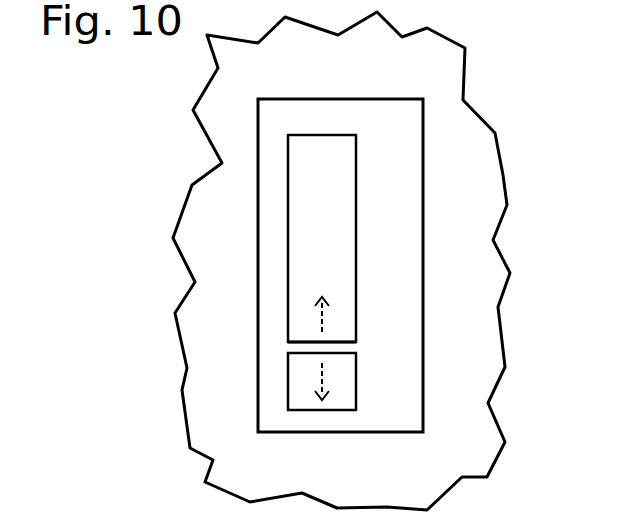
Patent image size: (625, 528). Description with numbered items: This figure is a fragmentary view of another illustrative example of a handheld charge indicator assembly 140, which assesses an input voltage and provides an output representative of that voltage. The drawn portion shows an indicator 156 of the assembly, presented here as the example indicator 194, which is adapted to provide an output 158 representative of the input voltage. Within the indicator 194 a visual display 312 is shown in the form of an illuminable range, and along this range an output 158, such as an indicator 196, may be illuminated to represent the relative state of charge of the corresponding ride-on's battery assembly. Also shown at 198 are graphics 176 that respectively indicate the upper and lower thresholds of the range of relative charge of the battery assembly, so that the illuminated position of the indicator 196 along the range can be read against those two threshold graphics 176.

The handheld charge indicator assembly 140 is at (465, 28).
The indicator 156 is at (444, 78).
The indicator example 194 is at (358, 86).
The output 158 is at (277, 322).
The visual display 312 is at (276, 377).
The indicator 196 is at (348, 348).
The graphics 176 is at (405, 173).
The graphics location 198 is at (401, 143).